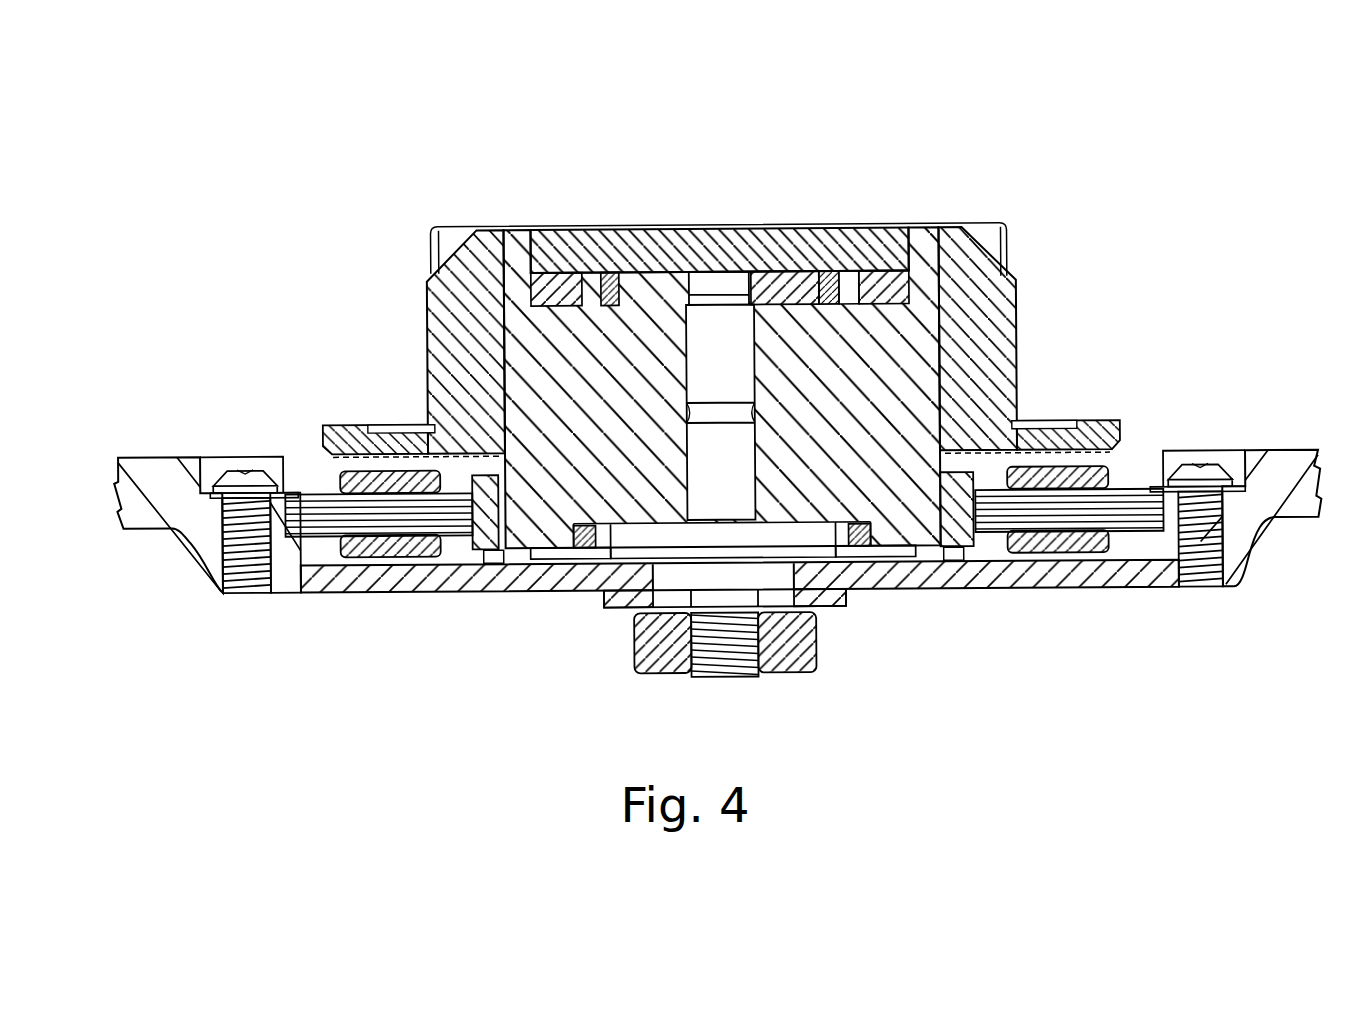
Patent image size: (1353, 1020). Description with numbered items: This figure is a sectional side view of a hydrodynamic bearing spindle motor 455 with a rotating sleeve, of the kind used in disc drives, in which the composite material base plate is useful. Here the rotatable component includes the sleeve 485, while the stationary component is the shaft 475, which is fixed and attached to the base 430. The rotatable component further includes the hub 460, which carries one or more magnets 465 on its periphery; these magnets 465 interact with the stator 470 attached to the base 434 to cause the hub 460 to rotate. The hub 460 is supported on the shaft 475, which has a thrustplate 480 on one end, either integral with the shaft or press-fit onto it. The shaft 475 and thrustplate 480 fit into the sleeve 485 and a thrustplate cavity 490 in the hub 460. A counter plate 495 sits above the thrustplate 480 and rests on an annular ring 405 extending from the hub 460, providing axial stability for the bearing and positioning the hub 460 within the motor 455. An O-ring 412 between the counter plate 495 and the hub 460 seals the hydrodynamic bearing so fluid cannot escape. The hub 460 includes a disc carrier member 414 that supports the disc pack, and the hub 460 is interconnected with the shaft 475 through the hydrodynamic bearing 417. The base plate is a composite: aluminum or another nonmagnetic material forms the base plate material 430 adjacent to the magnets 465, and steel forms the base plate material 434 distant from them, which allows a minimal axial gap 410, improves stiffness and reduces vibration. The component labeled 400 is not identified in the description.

The hydrodynamic bearing spindle motor 455 is at (388, 217).
The hub 460 is at (417, 400).
The counter plate 495 is at (590, 247).
The thrustplate 480 is at (778, 282).
The thrustplate cavity 490 is at (940, 337).
The O-ring 412 is at (893, 283).
The disc carrier member 414 is at (983, 320).
The annular ring 405 is at (940, 337).
The sleeve 485 is at (818, 369).
The shaft 475 is at (738, 467).
The magnets 465 is at (960, 473).
The stator 470 is at (1103, 467).
The base plate 400 is at (373, 590).
The base plate material 430 is at (443, 590).
The axial gap 410 is at (465, 590).
The base plate material 434 is at (278, 590).
The hydrodynamic bearing 417 is at (686, 358).